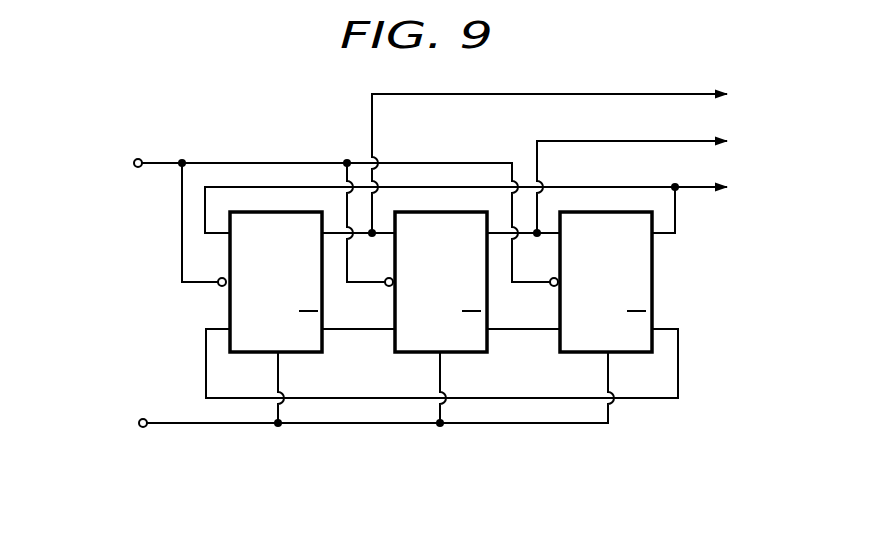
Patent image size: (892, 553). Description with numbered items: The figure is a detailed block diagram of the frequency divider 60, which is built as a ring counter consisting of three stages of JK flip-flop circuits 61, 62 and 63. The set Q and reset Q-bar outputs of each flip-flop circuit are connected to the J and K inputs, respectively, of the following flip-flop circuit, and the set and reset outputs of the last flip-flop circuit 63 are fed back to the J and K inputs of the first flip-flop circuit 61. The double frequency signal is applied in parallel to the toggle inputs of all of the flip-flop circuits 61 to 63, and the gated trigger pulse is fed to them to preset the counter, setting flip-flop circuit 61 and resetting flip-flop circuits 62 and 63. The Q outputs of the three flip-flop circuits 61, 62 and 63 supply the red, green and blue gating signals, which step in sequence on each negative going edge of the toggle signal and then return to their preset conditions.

The frequency divider 60 is at (301, 127).
The JK flip-flop circuit 61 is at (303, 353).
The JK flip-flop circuit 62 is at (466, 353).
The JK flip-flop circuit 63 is at (618, 353).